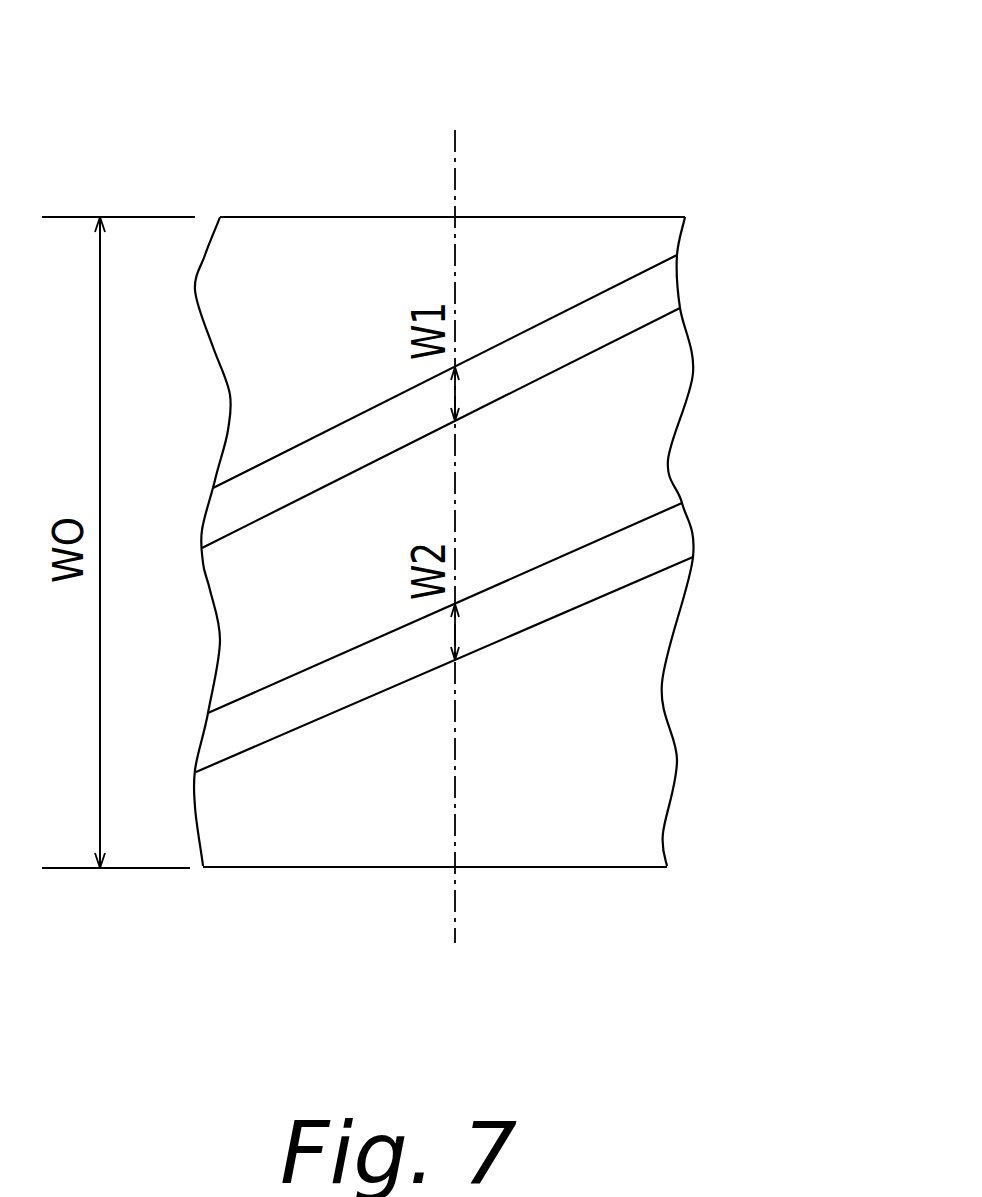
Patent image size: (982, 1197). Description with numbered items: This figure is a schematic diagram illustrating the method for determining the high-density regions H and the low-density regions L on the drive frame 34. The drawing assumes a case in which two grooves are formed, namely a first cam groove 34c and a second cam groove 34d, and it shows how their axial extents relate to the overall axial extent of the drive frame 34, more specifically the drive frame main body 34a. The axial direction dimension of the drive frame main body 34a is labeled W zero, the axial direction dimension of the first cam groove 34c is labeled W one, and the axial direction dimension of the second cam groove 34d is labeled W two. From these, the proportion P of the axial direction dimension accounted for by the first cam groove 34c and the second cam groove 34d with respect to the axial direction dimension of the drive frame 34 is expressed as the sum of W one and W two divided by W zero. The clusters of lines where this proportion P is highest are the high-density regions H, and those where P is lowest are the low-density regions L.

The drive frame 34 is at (675, 195).
The drive frame main body 34a is at (555, 255).
The first cam groove 34c is at (627, 280).
The second cam groove 34d is at (618, 532).